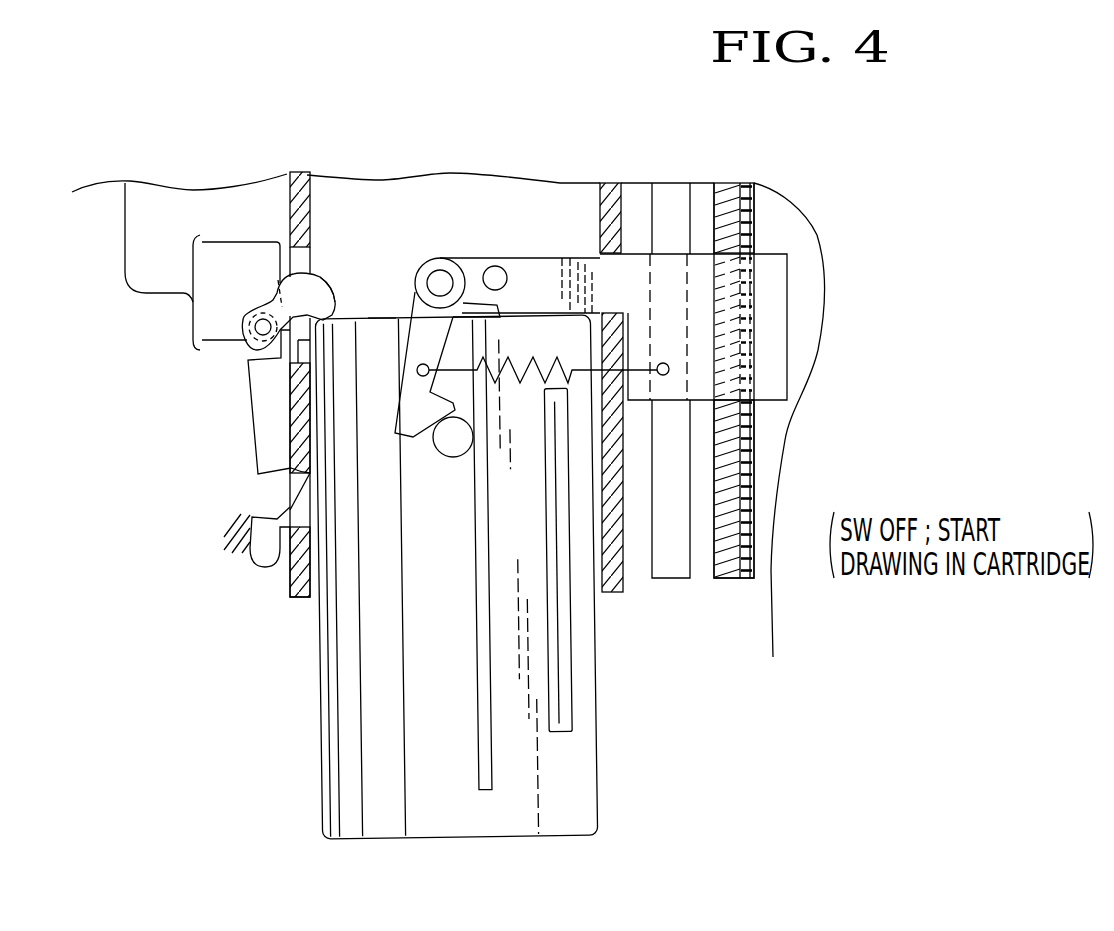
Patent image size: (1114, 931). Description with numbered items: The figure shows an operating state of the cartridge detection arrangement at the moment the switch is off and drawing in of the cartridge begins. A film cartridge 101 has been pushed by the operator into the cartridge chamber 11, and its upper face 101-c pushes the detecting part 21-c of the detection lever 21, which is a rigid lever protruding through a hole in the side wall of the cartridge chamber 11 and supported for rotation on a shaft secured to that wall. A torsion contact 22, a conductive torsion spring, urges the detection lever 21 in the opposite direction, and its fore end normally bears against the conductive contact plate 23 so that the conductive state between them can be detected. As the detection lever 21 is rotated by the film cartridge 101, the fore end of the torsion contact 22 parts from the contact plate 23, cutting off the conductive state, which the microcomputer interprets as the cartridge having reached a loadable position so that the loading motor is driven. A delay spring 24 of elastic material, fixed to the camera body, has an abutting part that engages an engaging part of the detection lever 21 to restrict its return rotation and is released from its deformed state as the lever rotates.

The cartridge chamber 11 is at (615, 593).
The detection lever 21 is at (331, 288).
The detecting part 21-c is at (329, 312).
The torsion contact 22 is at (217, 345).
The contact plate 23 is at (240, 242).
The delay spring 24 is at (252, 425).
The film cartridge 101 is at (588, 792).
The upper face 101-c is at (381, 318).